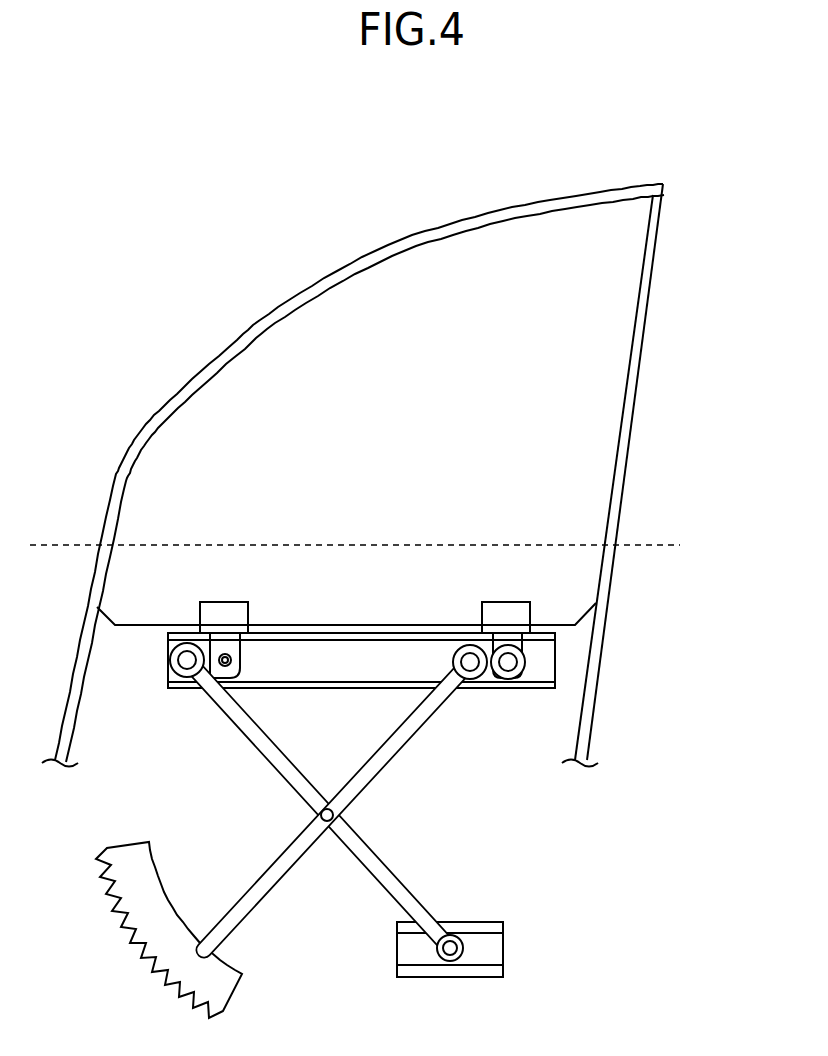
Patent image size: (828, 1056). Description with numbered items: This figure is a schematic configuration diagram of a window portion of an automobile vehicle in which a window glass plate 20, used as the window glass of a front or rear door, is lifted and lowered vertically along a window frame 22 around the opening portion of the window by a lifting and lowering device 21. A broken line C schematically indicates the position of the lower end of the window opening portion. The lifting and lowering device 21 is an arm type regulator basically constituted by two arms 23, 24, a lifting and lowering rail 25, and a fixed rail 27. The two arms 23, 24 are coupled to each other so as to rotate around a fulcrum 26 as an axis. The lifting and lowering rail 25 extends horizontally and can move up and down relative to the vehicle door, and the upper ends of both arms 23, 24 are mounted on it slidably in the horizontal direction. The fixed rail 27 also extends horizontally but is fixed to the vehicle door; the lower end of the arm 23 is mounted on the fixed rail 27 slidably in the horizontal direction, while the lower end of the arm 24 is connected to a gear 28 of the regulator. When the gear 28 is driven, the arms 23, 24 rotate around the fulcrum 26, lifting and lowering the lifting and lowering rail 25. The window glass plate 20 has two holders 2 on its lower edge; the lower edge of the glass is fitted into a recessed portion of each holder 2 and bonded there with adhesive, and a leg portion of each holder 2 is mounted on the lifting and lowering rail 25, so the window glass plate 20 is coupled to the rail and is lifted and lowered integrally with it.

The holder 2 is at (228, 610).
The window glass plate 20 is at (606, 468).
The lifting and lowering device 21 is at (341, 788).
The window frame 22 is at (656, 278).
The arm 23 is at (375, 864).
The arm 24 is at (280, 862).
The lifting and lowering rail 25 is at (545, 672).
The fulcrum 26 is at (326, 806).
The fixed rail 27 is at (498, 950).
The gear 28 is at (145, 963).
The broken line C is at (672, 545).